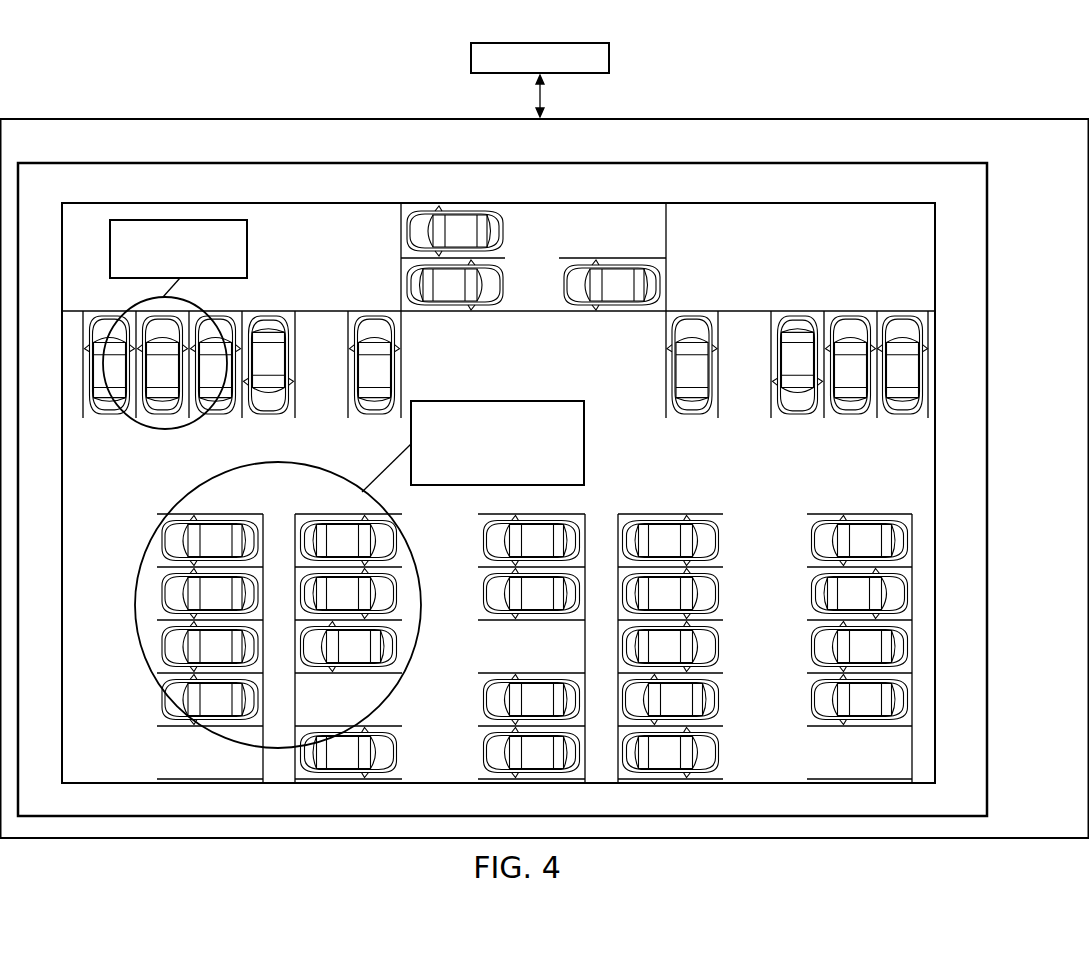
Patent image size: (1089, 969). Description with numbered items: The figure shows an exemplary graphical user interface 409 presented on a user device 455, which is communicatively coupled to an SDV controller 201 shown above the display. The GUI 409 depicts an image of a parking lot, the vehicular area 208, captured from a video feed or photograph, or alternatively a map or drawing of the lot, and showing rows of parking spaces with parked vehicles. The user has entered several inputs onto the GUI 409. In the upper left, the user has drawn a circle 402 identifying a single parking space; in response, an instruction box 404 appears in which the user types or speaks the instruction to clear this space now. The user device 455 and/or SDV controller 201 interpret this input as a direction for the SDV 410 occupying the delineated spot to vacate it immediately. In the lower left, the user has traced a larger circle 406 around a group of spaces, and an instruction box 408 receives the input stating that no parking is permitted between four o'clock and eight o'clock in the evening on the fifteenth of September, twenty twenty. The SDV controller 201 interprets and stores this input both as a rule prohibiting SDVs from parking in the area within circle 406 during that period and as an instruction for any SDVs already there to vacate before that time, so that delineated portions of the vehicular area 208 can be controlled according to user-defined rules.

The SDV controller 201 is at (609, 58).
The user device 455 is at (690, 119).
The vehicular area 208 is at (936, 444).
The graphical user interface 409 is at (987, 545).
The instruction box 404 is at (176, 220).
The circle 402 is at (153, 433).
The SDV 410 is at (170, 409).
The instruction box 408 is at (488, 401).
The circle 406 is at (140, 558).